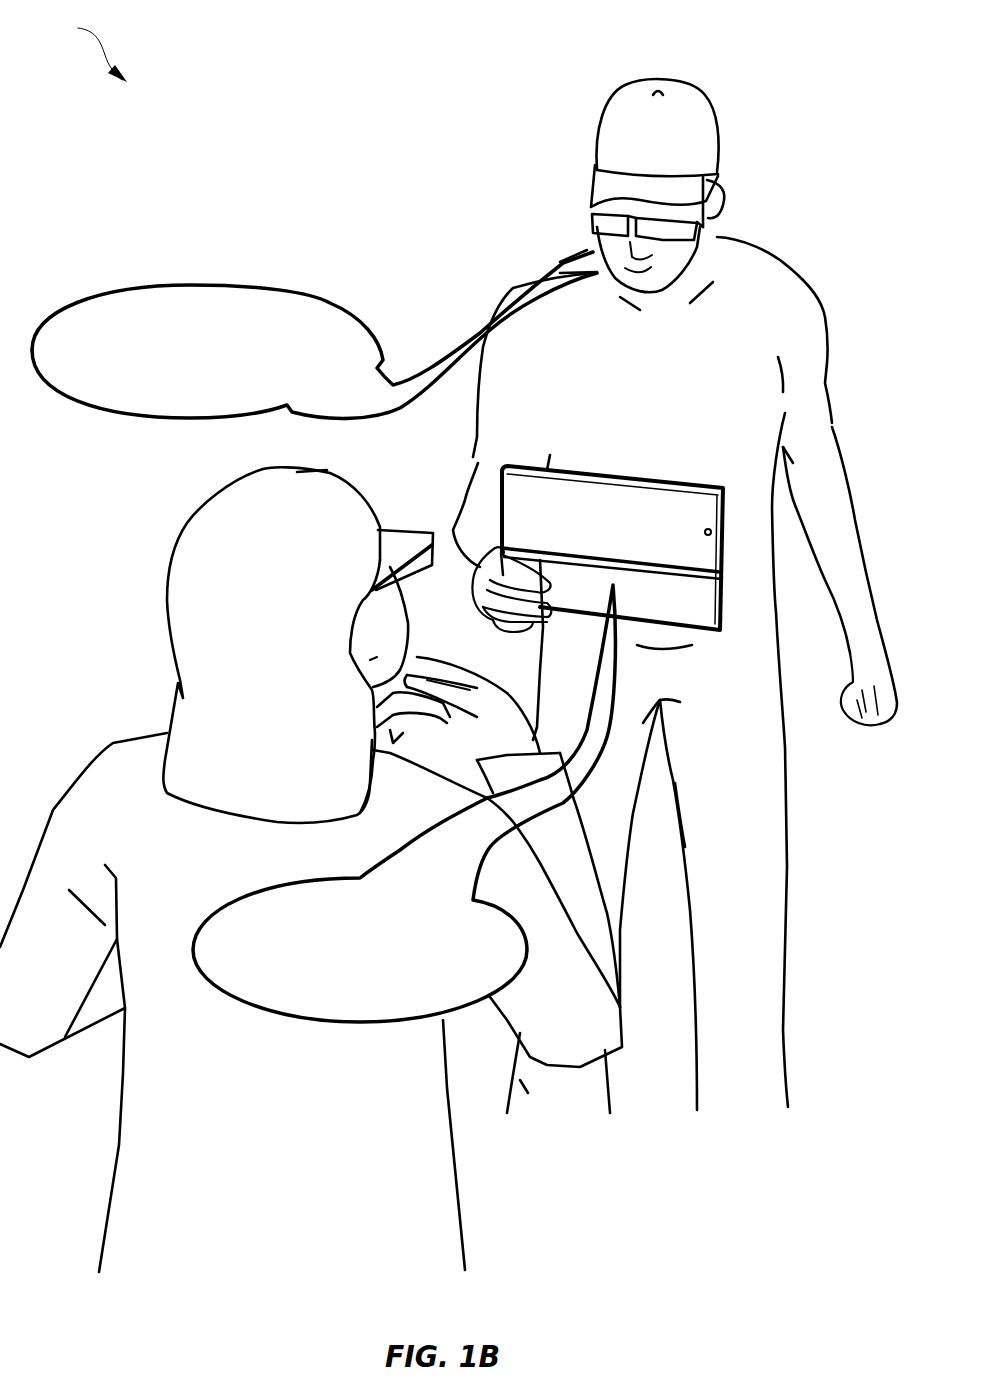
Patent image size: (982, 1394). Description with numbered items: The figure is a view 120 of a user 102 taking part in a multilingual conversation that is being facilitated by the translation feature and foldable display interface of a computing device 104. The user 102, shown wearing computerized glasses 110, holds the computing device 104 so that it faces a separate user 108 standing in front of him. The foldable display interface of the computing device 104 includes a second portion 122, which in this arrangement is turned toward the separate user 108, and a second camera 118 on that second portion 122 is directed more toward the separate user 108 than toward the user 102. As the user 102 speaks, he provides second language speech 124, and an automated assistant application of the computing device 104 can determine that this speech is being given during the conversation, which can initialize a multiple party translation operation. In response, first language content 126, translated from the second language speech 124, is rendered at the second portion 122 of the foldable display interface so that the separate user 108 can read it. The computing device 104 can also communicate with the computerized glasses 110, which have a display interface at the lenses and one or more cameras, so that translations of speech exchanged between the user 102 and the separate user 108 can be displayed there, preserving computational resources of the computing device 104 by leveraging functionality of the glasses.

The user 102 is at (666, 400).
The computing device 104 is at (528, 463).
The separate user 108 is at (286, 563).
The computerized glasses 110 is at (683, 245).
The second camera 118 is at (710, 528).
The view 120 is at (84, 48).
The second portion 122 is at (624, 528).
The second language speech 124 is at (250, 283).
The first language content 126 is at (336, 1024).